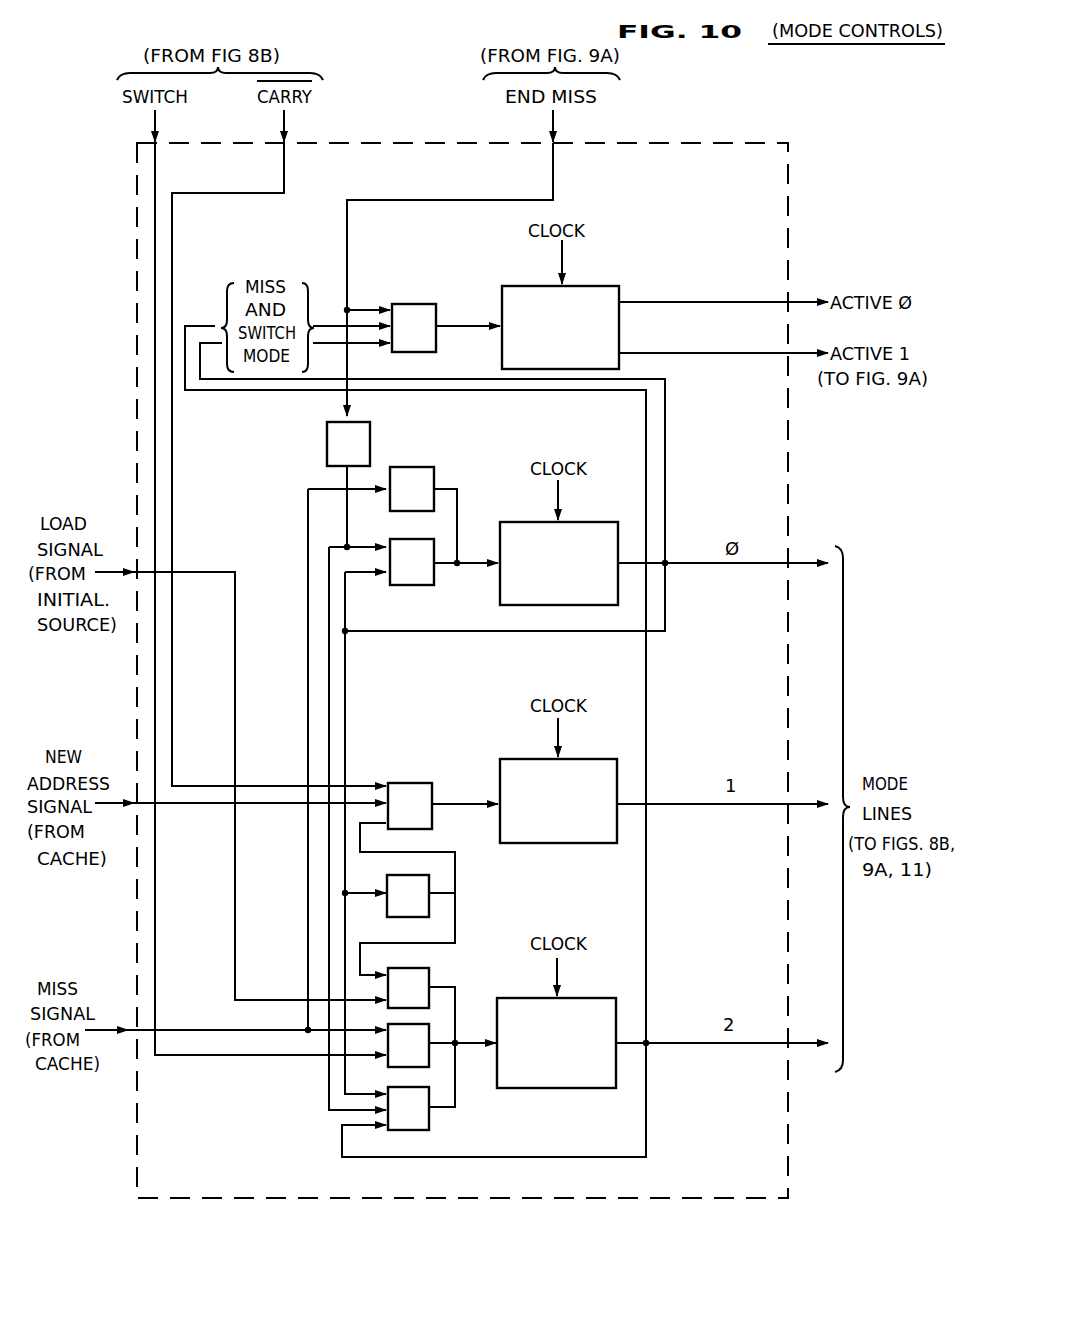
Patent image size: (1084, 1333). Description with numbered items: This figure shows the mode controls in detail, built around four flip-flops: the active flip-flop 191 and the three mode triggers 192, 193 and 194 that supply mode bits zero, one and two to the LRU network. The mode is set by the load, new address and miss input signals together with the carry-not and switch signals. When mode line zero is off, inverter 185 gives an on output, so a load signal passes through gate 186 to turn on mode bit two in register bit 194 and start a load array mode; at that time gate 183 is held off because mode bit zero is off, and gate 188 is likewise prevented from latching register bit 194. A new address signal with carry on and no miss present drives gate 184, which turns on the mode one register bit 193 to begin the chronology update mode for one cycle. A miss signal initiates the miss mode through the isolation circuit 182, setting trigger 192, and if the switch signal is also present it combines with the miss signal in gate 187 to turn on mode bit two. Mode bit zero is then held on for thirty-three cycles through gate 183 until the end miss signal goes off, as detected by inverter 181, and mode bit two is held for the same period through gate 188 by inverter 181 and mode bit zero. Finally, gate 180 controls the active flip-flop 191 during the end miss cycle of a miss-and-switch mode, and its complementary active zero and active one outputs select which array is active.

The gate 180 is at (400, 303).
The inverter 181 is at (370, 431).
The isolation circuit 182 is at (422, 467).
The gate 183 is at (425, 585).
The gate 184 is at (412, 782).
The inverter 185 is at (418, 885).
The gate 186 is at (425, 978).
The gate 187 is at (423, 1032).
The gate 188 is at (425, 1125).
The active flip-flop 191 is at (598, 285).
The trigger 192 is at (588, 521).
The mode 1 register bit 193 is at (583, 758).
The register bit 194 is at (583, 998).